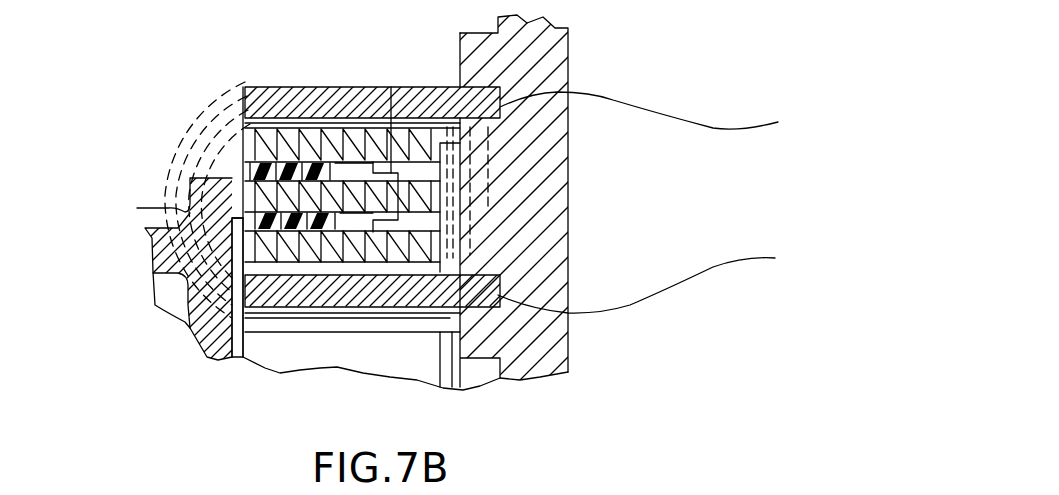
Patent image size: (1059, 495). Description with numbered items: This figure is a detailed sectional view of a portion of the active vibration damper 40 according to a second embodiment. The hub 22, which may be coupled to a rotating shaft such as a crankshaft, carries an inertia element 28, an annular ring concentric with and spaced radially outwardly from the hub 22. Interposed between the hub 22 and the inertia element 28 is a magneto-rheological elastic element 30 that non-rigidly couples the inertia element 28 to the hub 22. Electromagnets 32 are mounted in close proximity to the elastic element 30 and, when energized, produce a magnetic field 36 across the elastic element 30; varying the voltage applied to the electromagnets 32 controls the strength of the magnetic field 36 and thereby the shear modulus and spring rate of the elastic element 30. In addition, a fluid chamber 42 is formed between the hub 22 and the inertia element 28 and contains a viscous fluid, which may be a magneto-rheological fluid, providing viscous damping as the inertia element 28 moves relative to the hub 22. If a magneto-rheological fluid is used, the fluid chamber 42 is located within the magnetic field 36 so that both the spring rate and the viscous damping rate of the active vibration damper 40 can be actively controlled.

The hub 22 is at (202, 323).
The inertia element 28 is at (268, 155).
The magneto-rheological elastic element 30 is at (252, 172).
The electromagnets 32 is at (308, 85).
The magnetic field 36 is at (178, 138).
The active vibration damper 40 is at (230, 379).
The fluid chamber 42 is at (392, 87).